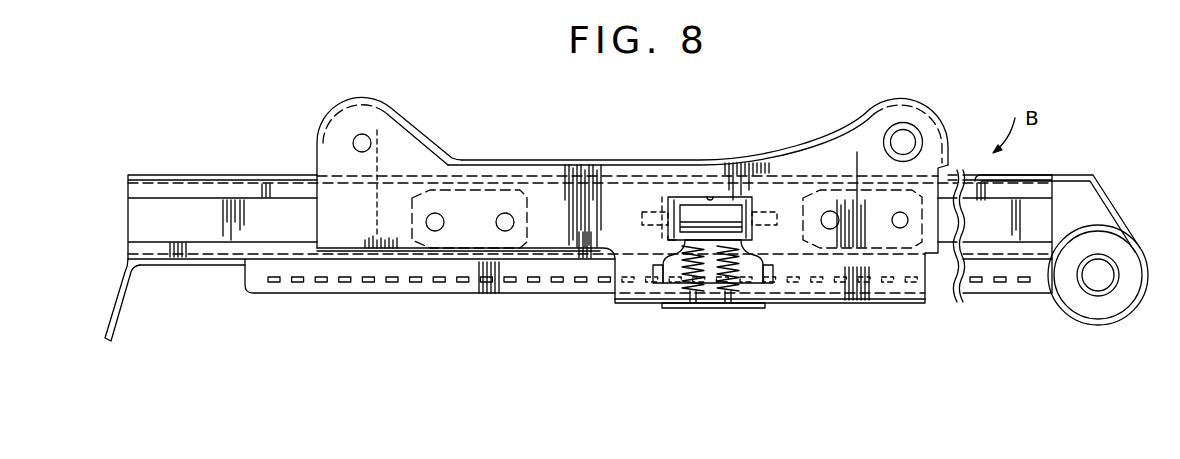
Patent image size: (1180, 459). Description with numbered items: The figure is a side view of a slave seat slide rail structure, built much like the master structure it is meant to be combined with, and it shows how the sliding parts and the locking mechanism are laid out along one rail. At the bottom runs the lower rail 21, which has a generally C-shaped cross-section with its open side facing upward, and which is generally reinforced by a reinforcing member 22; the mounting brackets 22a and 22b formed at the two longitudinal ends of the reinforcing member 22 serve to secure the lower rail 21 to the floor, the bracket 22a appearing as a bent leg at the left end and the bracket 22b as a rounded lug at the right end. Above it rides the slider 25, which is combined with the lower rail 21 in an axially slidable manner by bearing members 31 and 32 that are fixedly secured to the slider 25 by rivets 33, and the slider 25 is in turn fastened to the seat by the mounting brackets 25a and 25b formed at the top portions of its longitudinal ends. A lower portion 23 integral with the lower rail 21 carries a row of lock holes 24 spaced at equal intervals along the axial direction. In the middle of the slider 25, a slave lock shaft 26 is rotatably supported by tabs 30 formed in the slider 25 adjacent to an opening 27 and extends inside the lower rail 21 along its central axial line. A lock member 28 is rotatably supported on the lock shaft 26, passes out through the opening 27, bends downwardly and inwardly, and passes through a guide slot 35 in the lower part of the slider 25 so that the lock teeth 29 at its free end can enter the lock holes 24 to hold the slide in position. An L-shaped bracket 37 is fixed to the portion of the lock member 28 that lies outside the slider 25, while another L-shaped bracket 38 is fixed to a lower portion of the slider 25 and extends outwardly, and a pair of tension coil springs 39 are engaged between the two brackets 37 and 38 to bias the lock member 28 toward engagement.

The lower rail 21 is at (217, 193).
The reinforcing member 22 is at (167, 265).
The mounting bracket 22a is at (124, 318).
The mounting bracket 22b is at (1120, 220).
The lower portion 23 is at (252, 290).
The lock holes 24 is at (367, 284).
The slider 25 is at (795, 153).
The mounting bracket 25a is at (396, 116).
The mounting bracket 25b is at (935, 114).
The slave lock shaft 26 is at (645, 210).
The opening 27 is at (712, 196).
The lock member 28 is at (754, 241).
The lock teeth 29 is at (660, 280).
The tabs 30 is at (662, 196).
The bearing member 31 is at (493, 190).
The bearing member 32 is at (843, 185).
The rivets 33 is at (438, 213).
The guide slot 35 is at (768, 284).
The bracket 37 is at (669, 238).
The bracket 38 is at (713, 308).
The tension coil springs 39 is at (690, 289).